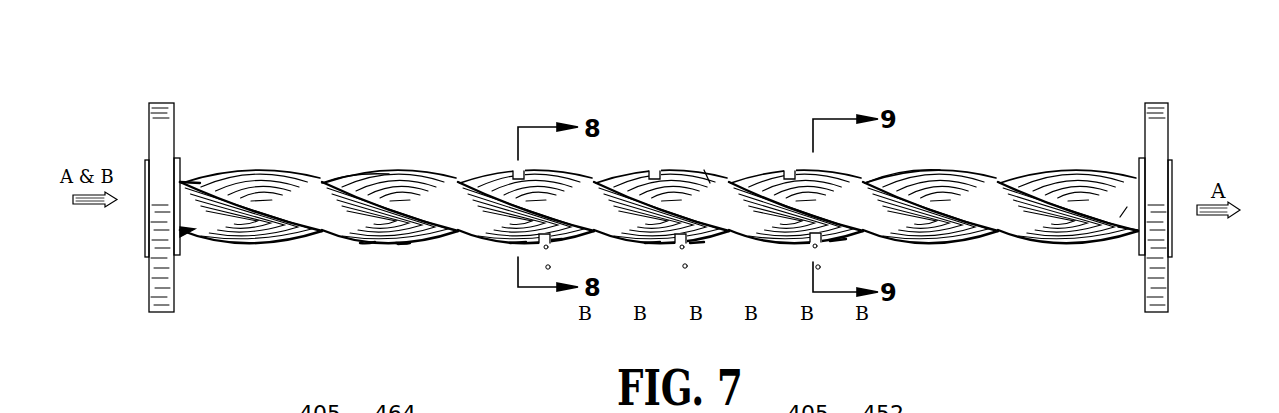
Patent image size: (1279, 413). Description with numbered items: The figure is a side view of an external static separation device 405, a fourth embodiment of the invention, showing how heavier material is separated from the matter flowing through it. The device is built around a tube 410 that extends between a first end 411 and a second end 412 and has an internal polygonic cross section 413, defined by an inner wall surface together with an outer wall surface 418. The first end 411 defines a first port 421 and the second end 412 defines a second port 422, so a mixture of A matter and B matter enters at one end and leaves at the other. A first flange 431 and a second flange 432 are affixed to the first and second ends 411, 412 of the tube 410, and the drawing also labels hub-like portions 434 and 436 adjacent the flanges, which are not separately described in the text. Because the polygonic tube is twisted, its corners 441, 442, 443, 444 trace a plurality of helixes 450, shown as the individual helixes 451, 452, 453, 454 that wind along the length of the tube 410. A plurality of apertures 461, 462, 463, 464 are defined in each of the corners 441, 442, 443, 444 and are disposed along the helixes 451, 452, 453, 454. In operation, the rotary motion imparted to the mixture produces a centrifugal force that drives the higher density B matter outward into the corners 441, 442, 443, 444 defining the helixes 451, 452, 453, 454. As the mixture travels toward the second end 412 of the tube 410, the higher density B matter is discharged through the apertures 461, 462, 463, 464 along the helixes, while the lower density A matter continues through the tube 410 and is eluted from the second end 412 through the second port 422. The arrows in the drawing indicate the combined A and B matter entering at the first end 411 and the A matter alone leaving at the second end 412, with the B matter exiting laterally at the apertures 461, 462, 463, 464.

The external static separation device 405 is at (345, 142).
The tube 410 is at (427, 180).
The first end 411 is at (195, 180).
The second end 412 is at (1137, 187).
The internal polygonic cross section 413 is at (697, 152).
The outer wall surface 418 is at (945, 177).
The first port 421 is at (200, 217).
The second port 422 is at (1118, 227).
The first flange 431 is at (162, 110).
The second flange 432 is at (1158, 105).
The hub of first end disk 434 is at (173, 127).
The hub of second end disk 436 is at (1145, 130).
The corner 441 is at (403, 242).
The corner 442 is at (557, 240).
The corner 443 is at (698, 243).
The corner 444 is at (840, 240).
The plurality of helixes 450 is at (367, 243).
The helix 451 is at (402, 243).
The helix 452 is at (517, 243).
The helix 453 is at (653, 243).
The helix 454 is at (800, 243).
The aperture 461 is at (650, 177).
The aperture 462 is at (787, 177).
The aperture 463 is at (680, 240).
The aperture 464 is at (513, 173).